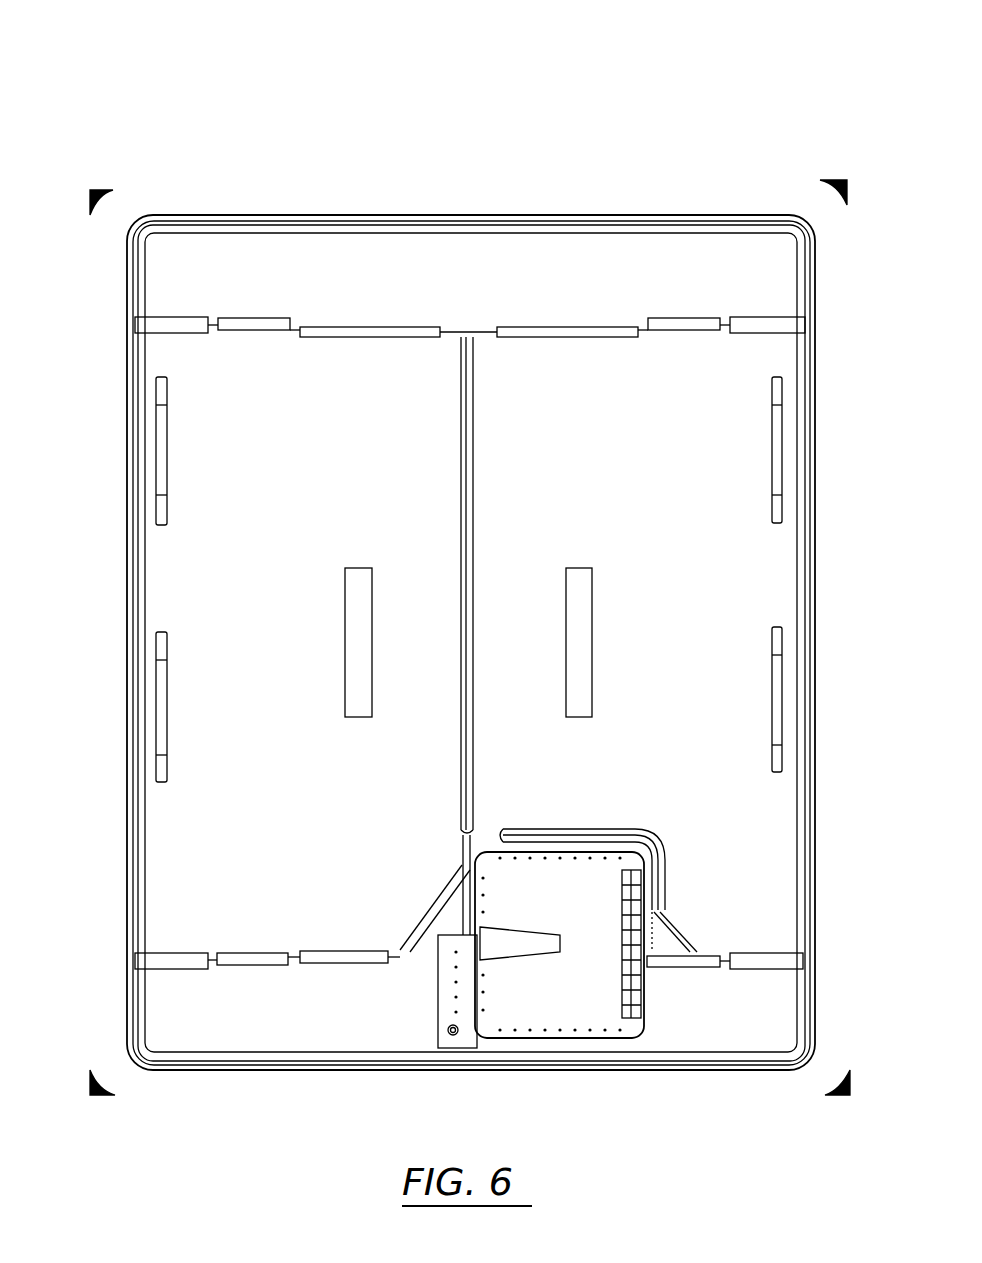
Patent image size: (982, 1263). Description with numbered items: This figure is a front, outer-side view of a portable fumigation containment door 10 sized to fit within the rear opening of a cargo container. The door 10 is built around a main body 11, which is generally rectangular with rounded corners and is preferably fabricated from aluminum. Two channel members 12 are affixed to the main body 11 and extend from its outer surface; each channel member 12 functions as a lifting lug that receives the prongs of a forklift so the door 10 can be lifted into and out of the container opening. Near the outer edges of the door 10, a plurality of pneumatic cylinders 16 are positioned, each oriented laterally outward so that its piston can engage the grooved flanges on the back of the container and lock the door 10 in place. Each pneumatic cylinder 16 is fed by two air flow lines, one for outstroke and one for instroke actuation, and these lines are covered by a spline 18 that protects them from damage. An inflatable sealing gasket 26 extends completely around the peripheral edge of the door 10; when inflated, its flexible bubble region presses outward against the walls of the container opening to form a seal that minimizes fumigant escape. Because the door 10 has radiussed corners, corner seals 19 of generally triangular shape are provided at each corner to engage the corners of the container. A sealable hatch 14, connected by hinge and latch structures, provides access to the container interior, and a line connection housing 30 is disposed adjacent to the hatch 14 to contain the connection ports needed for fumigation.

The fumigation containment door 10 is at (233, 120).
The main body 11 is at (618, 258).
The channel member 12 is at (345, 640).
The sealable hatch 14 is at (567, 922).
The pneumatic cylinder 16 is at (258, 321).
The spline 18 is at (475, 466).
The corner seal 19 is at (90, 205).
The inflatable sealing gasket 26 is at (812, 440).
The line connection housing 30 is at (426, 1045).